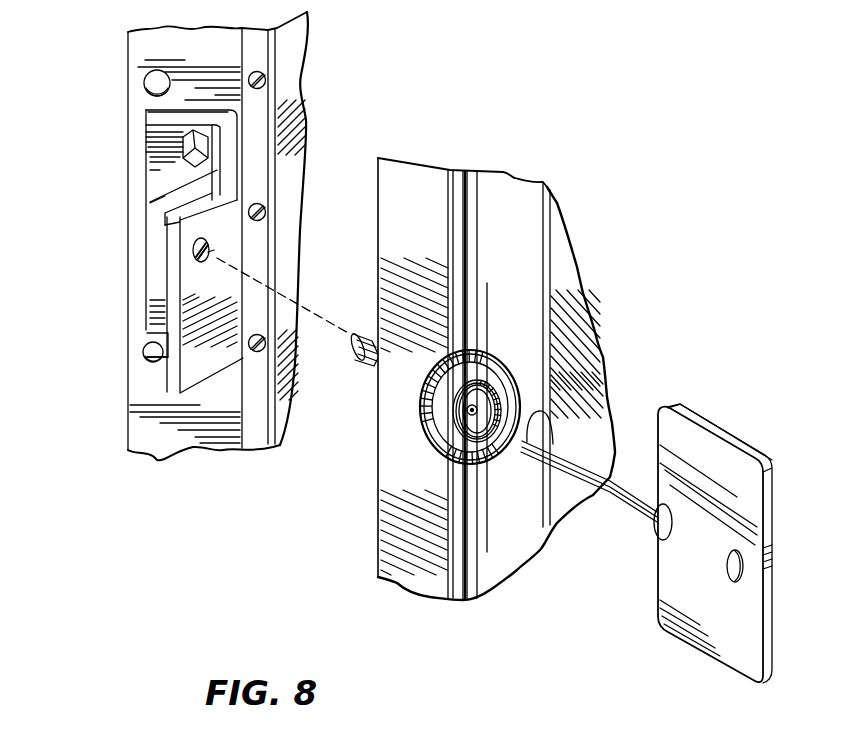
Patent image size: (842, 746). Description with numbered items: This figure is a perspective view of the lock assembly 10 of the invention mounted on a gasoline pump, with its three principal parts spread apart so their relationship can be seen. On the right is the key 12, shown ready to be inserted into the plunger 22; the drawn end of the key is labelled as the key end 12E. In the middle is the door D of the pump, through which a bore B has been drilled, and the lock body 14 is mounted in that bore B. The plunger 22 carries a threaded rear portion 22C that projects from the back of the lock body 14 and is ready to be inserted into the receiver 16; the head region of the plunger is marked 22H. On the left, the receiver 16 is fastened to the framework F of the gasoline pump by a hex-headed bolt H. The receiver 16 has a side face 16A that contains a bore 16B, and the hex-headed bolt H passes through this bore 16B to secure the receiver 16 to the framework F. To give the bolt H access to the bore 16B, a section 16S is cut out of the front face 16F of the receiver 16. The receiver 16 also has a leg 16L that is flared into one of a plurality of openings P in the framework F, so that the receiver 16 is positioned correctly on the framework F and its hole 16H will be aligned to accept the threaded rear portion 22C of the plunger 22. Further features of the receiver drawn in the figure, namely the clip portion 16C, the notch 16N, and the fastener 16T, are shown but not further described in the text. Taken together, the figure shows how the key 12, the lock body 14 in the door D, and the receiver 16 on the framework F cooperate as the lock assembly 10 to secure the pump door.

The lock assembly 10 is at (293, 477).
The key 12 is at (665, 630).
The key spindle end 12E is at (560, 420).
The lock body 14 is at (459, 411).
The receiver 16 is at (245, 200).
The side face 16A is at (157, 180).
The bore 16B is at (158, 130).
The bracket lower clip 16C is at (157, 362).
The front face 16F is at (190, 245).
The bracket hole 16H is at (212, 248).
The leg 16L is at (150, 338).
The bracket notch 16N is at (197, 230).
The section 16S is at (150, 203).
The bracket screw 16T is at (193, 257).
The plunger 22 is at (493, 411).
The threaded rear portion 22C is at (353, 370).
The hub head 22H is at (490, 352).
The bore B is at (437, 460).
The door D is at (398, 568).
The framework F is at (292, 92).
The hex-headed bolt H is at (183, 160).
The openings P is at (146, 86).